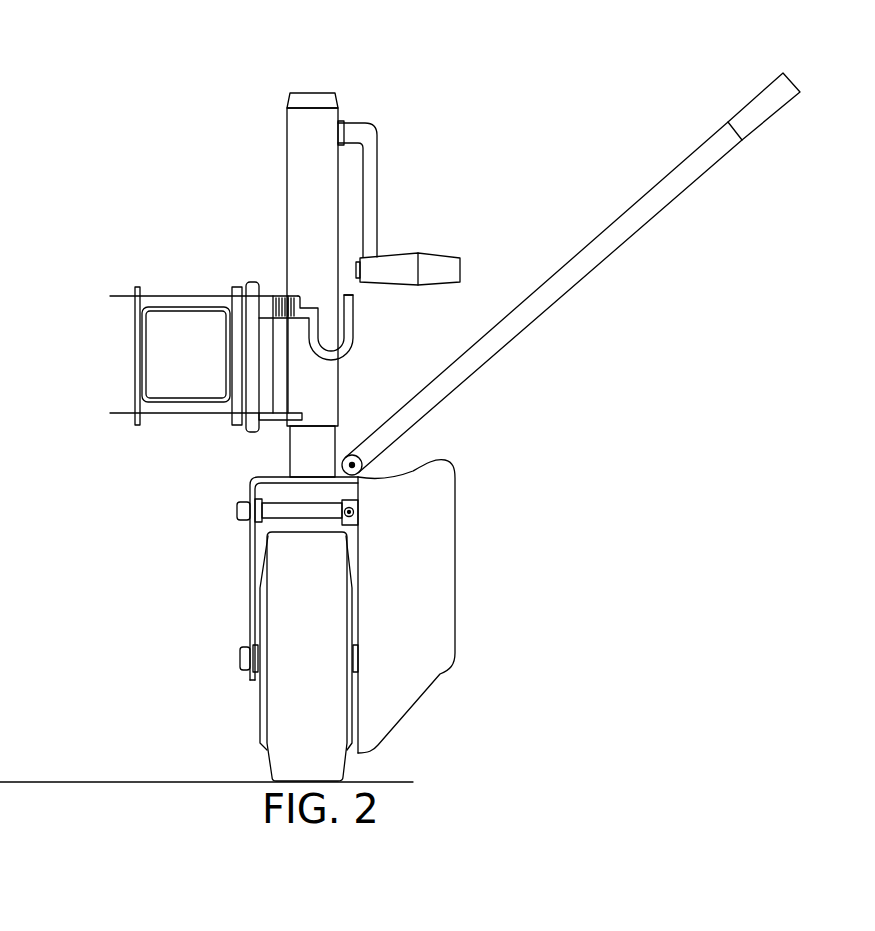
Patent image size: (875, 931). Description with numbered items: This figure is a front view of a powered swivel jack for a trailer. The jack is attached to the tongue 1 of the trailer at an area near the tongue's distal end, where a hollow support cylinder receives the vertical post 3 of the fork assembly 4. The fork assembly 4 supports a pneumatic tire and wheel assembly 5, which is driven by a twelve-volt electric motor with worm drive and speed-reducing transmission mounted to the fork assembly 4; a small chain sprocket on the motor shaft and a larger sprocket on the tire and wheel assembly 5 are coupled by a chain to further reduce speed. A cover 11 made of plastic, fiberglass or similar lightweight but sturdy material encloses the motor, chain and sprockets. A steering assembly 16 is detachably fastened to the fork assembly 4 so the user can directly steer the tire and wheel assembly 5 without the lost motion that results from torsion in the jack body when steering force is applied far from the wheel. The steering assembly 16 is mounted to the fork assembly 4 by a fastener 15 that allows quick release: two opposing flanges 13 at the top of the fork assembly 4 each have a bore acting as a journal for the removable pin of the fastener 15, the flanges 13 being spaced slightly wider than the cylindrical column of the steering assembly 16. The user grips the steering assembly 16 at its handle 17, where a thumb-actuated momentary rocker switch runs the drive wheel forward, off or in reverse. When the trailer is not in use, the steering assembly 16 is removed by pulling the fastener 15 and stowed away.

The tongue 1 is at (182, 307).
The vertical post 3 is at (285, 473).
The fork assembly 4 is at (250, 555).
The pneumatic tire and wheel assembly 5 is at (282, 700).
The cover 11 is at (455, 588).
The opposing flanges 13 is at (347, 458).
The fastener 15 is at (410, 428).
The steering assembly 16 is at (613, 250).
The handle 17 is at (758, 128).